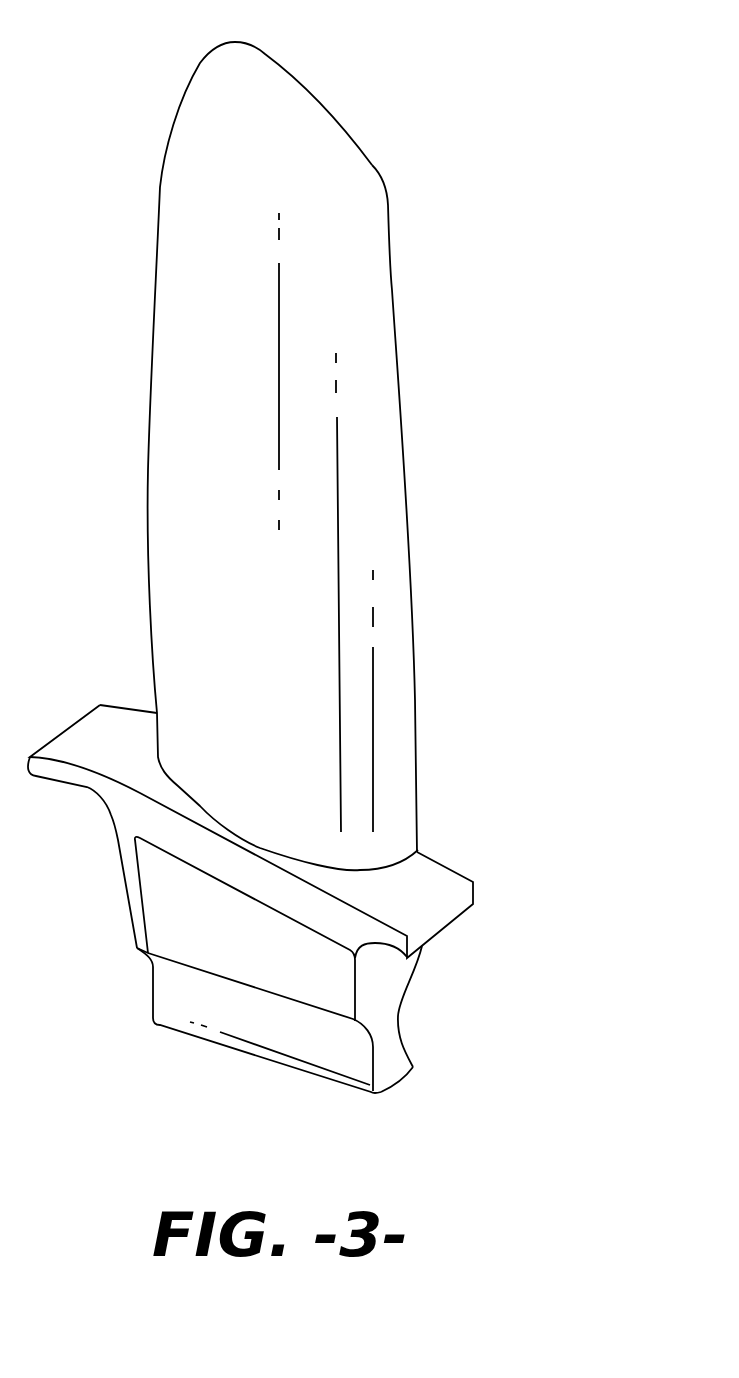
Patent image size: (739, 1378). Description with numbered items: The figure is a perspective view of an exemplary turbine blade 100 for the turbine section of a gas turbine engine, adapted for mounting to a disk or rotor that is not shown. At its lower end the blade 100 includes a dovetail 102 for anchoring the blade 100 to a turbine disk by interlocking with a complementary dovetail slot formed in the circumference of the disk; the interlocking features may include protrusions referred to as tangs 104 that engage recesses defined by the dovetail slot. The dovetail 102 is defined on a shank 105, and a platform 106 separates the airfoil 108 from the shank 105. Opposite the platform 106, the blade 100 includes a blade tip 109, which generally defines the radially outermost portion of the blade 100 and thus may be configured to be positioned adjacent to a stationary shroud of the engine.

The turbine blade 100 is at (514, 137).
The dovetail 102 is at (392, 1063).
The tangs 104 is at (272, 1035).
The shank 105 is at (172, 900).
The platform 106 is at (437, 880).
The airfoil 108 is at (380, 466).
The blade tip 109 is at (275, 62).